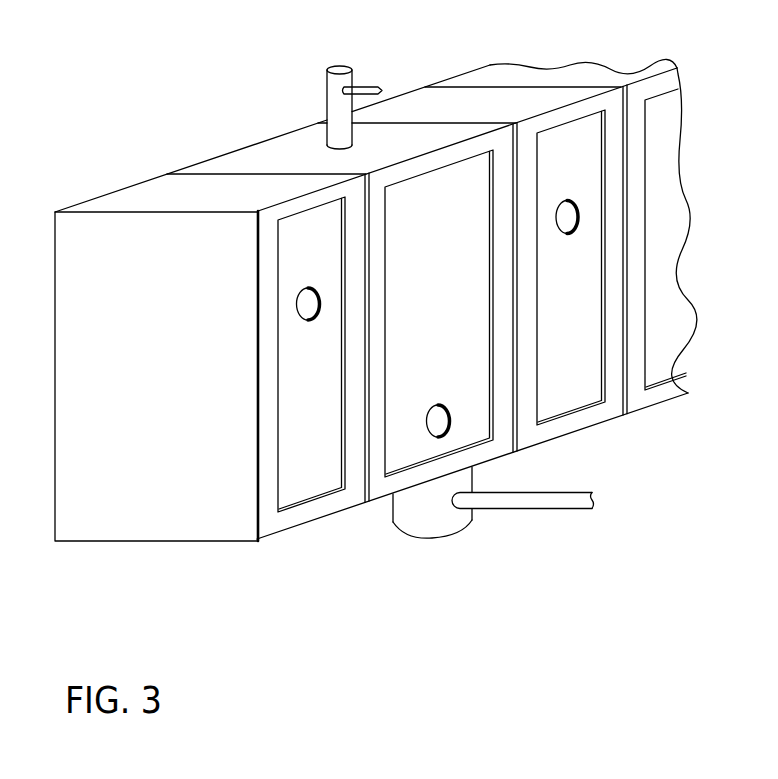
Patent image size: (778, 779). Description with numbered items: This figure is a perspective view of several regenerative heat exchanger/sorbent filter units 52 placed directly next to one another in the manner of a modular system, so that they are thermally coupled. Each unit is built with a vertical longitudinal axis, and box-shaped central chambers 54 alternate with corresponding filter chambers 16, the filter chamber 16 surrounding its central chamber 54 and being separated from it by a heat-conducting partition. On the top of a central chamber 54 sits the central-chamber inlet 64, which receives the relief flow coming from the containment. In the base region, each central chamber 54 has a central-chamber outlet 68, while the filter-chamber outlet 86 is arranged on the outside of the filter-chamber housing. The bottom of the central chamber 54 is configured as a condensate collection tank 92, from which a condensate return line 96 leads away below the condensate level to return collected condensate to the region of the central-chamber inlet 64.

The filter chamber 16 is at (158, 193).
The heat exchanger/sorbent filter unit 52 is at (142, 613).
The central chamber 54 is at (257, 160).
The central-chamber inlet 64 is at (337, 66).
The central-chamber outlet 68 is at (438, 403).
The filter-chamber outlet 86 is at (308, 322).
The condensate collection tank 92 is at (428, 541).
The condensate return line 96 is at (371, 85).